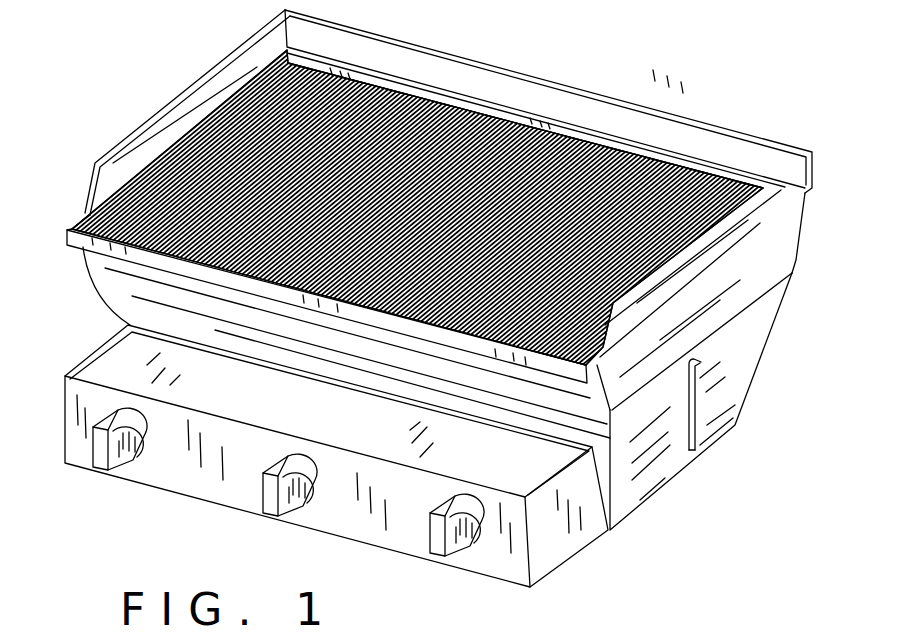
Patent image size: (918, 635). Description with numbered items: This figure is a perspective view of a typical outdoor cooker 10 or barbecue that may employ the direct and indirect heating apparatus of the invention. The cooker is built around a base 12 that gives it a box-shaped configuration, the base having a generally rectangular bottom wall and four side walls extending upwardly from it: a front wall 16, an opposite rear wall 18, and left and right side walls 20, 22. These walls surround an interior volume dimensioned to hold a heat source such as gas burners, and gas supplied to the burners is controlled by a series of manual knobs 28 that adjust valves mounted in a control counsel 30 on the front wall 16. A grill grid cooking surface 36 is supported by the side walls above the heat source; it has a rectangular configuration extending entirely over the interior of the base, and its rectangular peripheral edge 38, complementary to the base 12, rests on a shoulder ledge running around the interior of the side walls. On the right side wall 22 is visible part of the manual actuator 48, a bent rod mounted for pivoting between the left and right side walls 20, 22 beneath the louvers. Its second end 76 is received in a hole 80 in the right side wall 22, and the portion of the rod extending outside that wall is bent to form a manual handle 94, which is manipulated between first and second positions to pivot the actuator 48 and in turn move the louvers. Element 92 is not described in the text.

The cooker 10 is at (653, 70).
The base 12 is at (783, 330).
The front wall 16 is at (130, 283).
The rear wall 18 is at (730, 147).
The left side wall 20 is at (183, 110).
The right side wall 22 is at (798, 231).
The manual knobs 28 is at (97, 450).
The control counsel 30 is at (77, 422).
The grill grid cooking surface 36 is at (127, 200).
The peripheral edge 38 is at (393, 93).
The manual actuator 48 is at (712, 394).
The second end 76 is at (677, 372).
The hole 80 is at (705, 353).
The slot 92 is at (710, 368).
The manual handle 94 is at (697, 427).